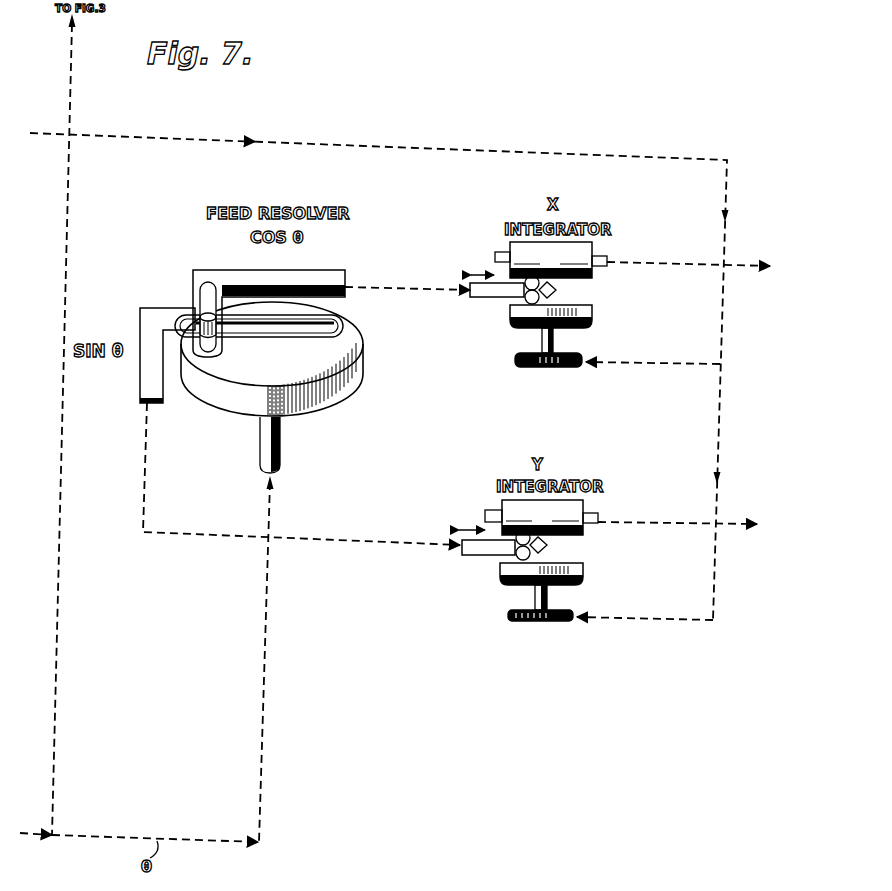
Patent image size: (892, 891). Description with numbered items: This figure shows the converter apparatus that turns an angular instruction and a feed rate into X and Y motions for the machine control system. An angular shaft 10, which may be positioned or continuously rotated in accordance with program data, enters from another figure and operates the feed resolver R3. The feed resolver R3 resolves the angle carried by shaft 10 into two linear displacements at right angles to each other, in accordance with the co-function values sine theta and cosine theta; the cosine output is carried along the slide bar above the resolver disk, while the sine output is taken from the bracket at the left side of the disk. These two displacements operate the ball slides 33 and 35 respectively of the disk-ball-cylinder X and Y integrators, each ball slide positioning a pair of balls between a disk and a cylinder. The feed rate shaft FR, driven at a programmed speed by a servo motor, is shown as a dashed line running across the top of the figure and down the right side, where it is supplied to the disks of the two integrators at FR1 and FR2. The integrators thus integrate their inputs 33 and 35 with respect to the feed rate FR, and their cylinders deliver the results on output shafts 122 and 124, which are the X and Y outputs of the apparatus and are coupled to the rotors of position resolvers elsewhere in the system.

The shaft 10 is at (71, 76).
The ball slide 33 is at (475, 297).
The ball slide 35 is at (468, 556).
The shaft 122 is at (668, 262).
The shaft 124 is at (654, 522).
The feed resolver R3 is at (330, 412).
The feed rate shaft FR is at (350, 147).
The feed rate input to X integrator disk FR1 is at (672, 346).
The feed rate input to Y integrator disk FR2 is at (650, 604).